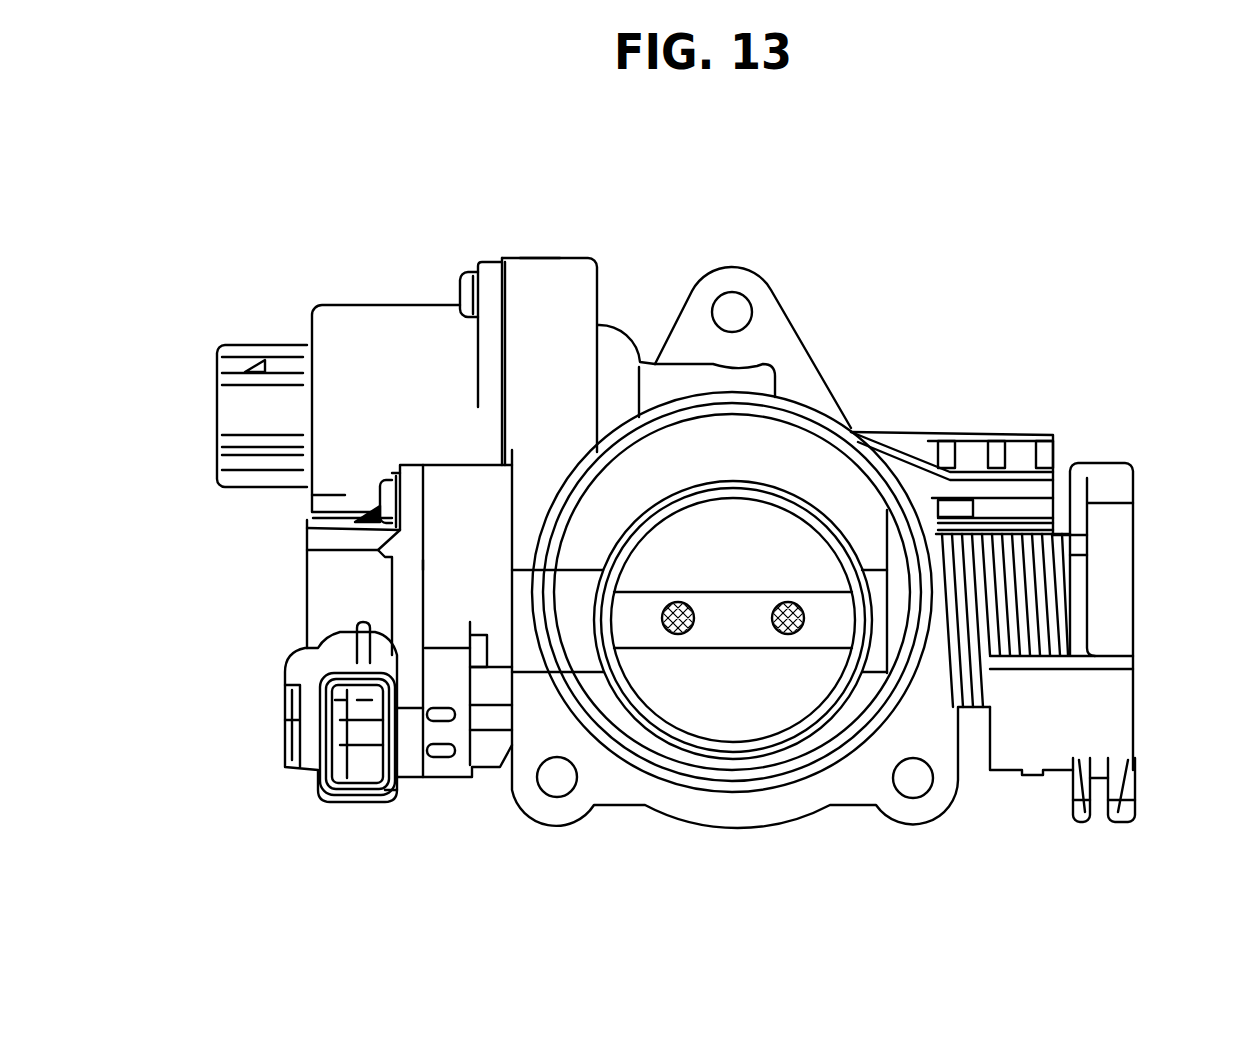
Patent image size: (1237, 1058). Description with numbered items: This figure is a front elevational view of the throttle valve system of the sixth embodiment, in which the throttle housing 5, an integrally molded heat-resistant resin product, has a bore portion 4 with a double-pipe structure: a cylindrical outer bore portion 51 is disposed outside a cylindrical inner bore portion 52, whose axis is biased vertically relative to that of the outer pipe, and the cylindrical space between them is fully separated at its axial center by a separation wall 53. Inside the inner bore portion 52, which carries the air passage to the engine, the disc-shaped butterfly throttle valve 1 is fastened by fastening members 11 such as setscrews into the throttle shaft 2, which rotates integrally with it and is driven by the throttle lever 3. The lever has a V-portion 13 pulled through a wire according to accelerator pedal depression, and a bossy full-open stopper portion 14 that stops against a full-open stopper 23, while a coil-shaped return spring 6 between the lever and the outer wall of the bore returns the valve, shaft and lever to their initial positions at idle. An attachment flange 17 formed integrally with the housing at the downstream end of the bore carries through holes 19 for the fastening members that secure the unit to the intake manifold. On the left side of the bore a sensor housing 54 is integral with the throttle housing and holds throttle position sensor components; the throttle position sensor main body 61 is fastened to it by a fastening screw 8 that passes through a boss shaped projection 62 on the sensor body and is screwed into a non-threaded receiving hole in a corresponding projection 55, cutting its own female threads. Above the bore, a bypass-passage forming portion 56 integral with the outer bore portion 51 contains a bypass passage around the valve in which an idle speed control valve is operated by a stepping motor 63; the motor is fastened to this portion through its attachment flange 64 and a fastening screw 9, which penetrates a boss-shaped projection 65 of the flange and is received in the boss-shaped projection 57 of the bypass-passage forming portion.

The throttle valve 1 is at (758, 708).
The throttle shaft 2 is at (645, 633).
The throttle lever 3 is at (1140, 625).
The bore portion 4 is at (699, 805).
The throttle housing 5 is at (977, 423).
The return spring 6 is at (975, 707).
The fastening screw 8 is at (348, 494).
The fastening screw 9 is at (462, 280).
The fastening members 11 is at (676, 633).
The V-portion 13 is at (1116, 805).
The full-open stopper portion 14 is at (1032, 745).
The attachment flange 17 is at (780, 302).
The through holes 19 is at (732, 306).
The full-open stopper 23 is at (1032, 498).
The outer bore portion 51 is at (738, 792).
The inner bore portion 52 is at (802, 755).
The separation wall 53 is at (810, 458).
The sensor housing 54 is at (438, 565).
The projection 55 is at (435, 568).
The bypass-passage forming portion 56 is at (618, 330).
The boss-shaped projection 57 is at (570, 270).
The throttle position sensor main body 61 is at (305, 603).
The boss shaped projection 62 is at (405, 465).
The stepping motor 63 is at (325, 305).
The attachment flange 64 is at (505, 300).
The boss-shaped projection 65 is at (480, 262).